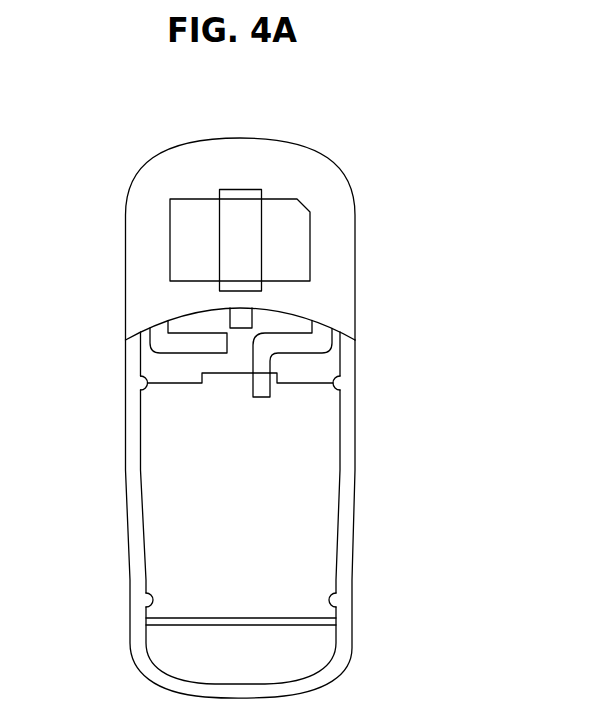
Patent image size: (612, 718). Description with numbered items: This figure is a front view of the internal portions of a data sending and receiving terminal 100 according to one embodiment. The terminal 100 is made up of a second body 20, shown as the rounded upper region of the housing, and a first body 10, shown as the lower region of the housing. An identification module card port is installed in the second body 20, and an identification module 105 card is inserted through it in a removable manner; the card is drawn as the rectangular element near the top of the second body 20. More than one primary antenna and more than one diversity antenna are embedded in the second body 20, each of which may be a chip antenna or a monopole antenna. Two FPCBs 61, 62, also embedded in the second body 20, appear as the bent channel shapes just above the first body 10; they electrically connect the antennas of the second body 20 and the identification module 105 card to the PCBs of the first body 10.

The data sending and receiving terminal 100 is at (59, 135).
The second body 20 is at (355, 275).
The first body 10 is at (353, 540).
The identification module card 105 is at (298, 230).
The FPCB 61 is at (163, 340).
The FPCB 62 is at (317, 342).